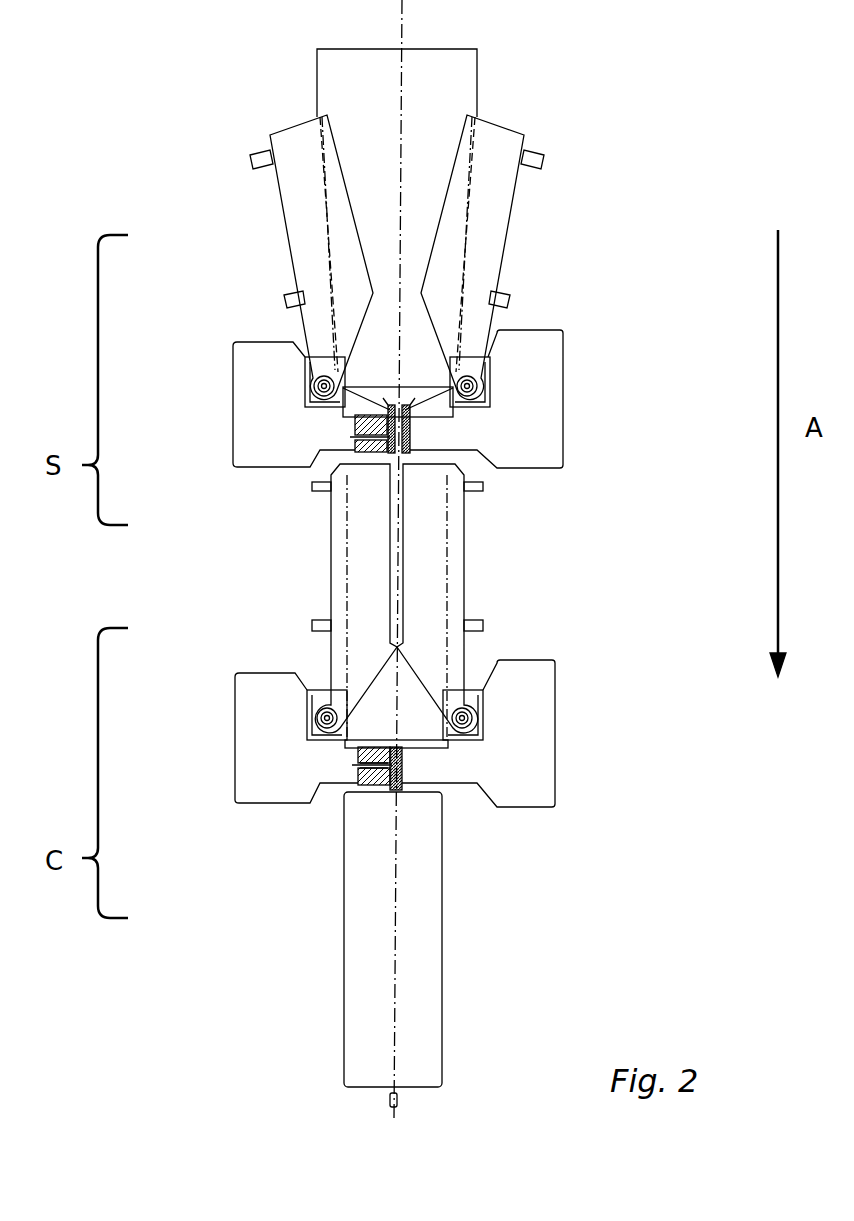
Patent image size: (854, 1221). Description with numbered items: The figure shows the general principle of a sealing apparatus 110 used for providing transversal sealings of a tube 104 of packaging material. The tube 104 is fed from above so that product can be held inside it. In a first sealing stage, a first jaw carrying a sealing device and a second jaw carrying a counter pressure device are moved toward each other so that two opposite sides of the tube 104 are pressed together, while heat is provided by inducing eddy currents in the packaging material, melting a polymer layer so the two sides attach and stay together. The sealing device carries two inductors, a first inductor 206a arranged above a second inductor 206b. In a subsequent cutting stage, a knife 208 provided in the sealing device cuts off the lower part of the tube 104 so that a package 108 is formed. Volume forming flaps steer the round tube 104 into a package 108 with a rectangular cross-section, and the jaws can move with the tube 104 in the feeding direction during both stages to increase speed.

The tube 104 is at (458, 97).
The package 108 is at (427, 957).
The sealing apparatus 110 is at (205, 262).
The first inductor 206a is at (385, 758).
The second inductor 206b is at (383, 780).
The knife 208 is at (372, 776).